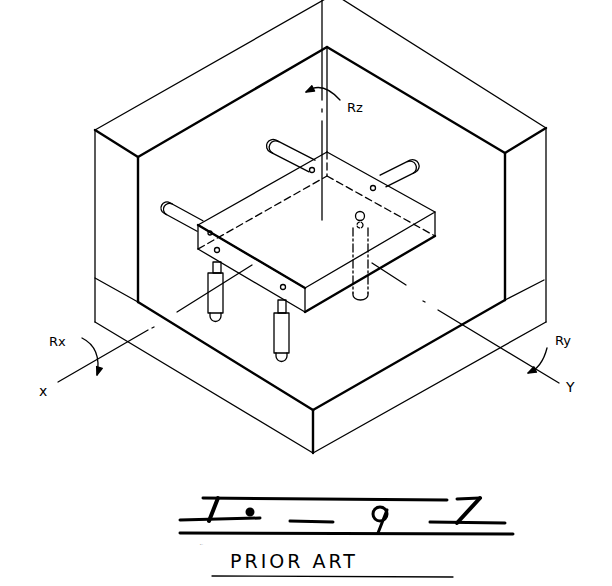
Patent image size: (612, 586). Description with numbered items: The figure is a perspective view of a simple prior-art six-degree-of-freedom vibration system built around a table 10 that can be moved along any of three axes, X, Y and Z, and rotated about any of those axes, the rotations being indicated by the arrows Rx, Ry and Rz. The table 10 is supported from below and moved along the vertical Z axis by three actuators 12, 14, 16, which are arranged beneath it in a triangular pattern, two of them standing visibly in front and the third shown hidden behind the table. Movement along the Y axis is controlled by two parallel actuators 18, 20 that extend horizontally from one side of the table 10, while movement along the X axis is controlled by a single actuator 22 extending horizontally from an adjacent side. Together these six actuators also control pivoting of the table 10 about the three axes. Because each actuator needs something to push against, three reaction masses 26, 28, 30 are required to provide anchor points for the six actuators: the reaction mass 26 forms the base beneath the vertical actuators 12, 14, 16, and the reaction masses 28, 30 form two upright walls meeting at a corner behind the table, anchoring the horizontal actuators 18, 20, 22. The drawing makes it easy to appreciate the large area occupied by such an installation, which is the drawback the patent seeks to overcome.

The table 10 is at (323, 254).
The actuator 12 is at (204, 315).
The actuator 14 is at (271, 355).
The actuator 16 is at (360, 297).
The actuator 18 is at (183, 207).
The actuator 20 is at (266, 155).
The actuator 22 is at (403, 182).
The reaction mass 26 is at (428, 372).
The reaction mass 28 is at (93, 216).
The reaction mass 30 is at (521, 115).